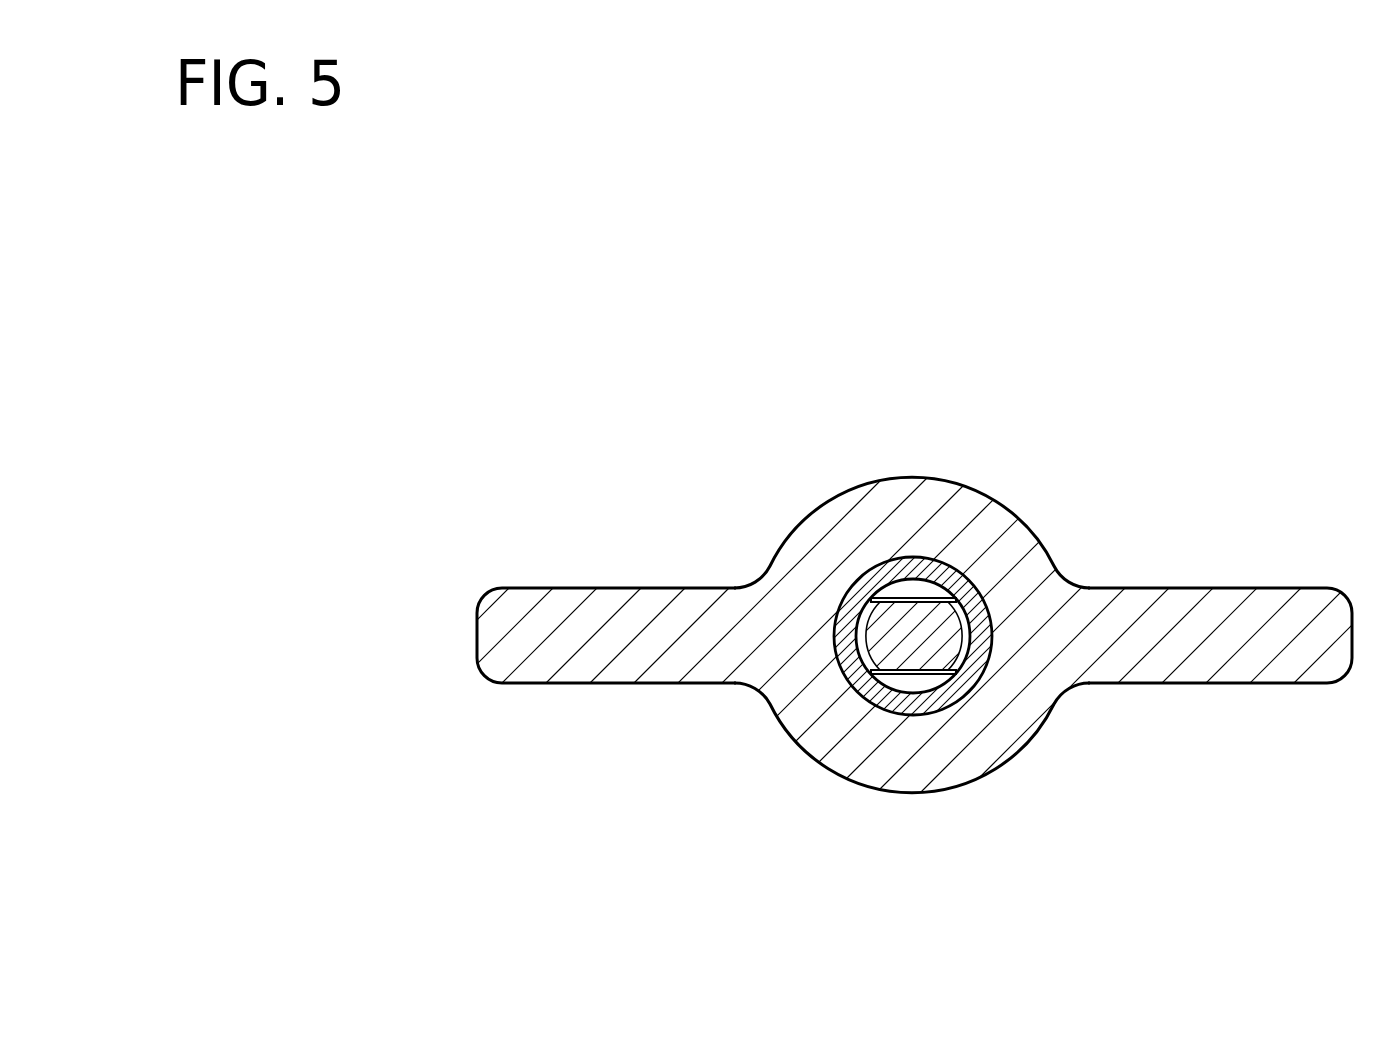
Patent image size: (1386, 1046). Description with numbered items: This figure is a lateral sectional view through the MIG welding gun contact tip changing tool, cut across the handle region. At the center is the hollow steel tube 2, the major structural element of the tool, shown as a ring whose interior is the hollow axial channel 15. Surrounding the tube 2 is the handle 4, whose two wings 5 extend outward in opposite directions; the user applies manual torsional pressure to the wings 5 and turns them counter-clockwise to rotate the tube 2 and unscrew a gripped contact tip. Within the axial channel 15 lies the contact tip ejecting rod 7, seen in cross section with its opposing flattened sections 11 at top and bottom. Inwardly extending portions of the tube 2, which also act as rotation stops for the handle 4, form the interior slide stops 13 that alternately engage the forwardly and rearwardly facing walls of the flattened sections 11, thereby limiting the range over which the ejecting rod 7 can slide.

The hollow steel tube 2 is at (935, 573).
The handle 4 is at (825, 705).
The wings 5 is at (552, 647).
The contact tip ejecting rod 7 is at (900, 597).
The flattened sections 11 is at (897, 622).
The interior slide stops 13 is at (990, 591).
The hollow axial channel 15 is at (857, 647).